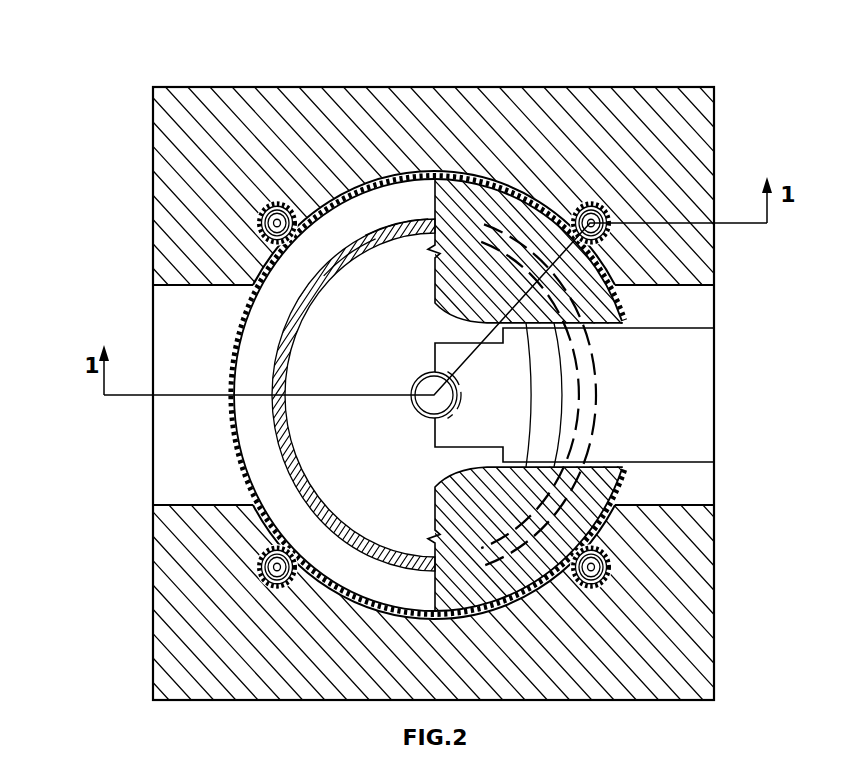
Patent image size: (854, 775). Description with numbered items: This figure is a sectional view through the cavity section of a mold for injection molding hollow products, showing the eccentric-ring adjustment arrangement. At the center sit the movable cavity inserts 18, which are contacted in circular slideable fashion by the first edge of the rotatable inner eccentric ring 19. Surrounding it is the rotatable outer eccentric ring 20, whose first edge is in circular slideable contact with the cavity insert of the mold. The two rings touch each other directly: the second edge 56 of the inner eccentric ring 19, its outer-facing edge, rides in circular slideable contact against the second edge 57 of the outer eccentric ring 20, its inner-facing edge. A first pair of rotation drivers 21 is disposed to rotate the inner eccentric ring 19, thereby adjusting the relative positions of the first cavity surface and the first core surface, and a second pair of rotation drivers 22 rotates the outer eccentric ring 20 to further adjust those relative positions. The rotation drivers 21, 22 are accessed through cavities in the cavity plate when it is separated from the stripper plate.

The movable cavity inserts 18 is at (312, 450).
The rotatable inner eccentric ring 19 is at (280, 348).
The rotatable outer eccentric ring 20 is at (250, 423).
The first pair of rotation drivers 21 is at (603, 205).
The second pair of rotation drivers 22 is at (253, 203).
The second edge of the inner eccentric ring 56 is at (378, 228).
The second edge of the outer eccentric ring 57 is at (338, 247).